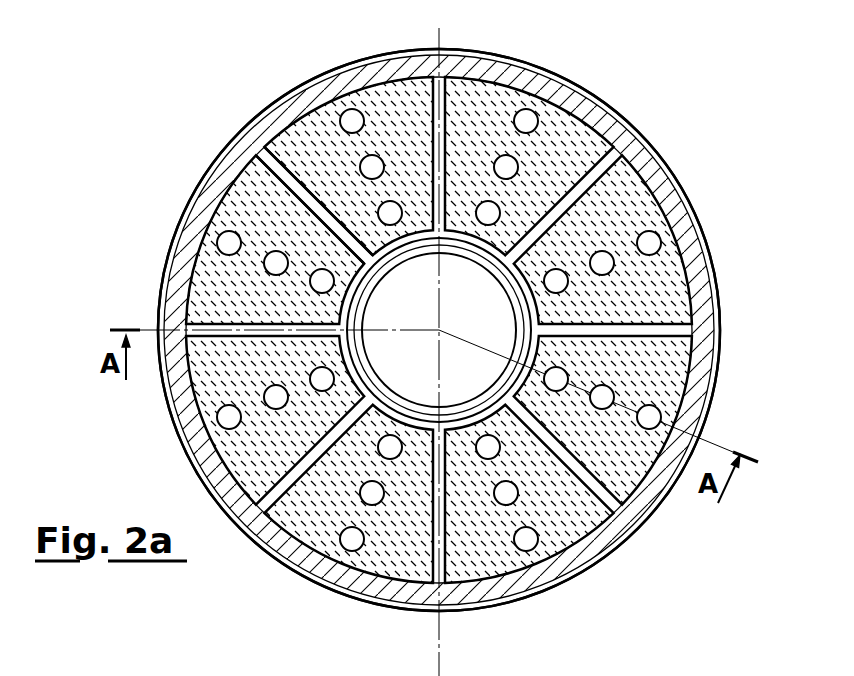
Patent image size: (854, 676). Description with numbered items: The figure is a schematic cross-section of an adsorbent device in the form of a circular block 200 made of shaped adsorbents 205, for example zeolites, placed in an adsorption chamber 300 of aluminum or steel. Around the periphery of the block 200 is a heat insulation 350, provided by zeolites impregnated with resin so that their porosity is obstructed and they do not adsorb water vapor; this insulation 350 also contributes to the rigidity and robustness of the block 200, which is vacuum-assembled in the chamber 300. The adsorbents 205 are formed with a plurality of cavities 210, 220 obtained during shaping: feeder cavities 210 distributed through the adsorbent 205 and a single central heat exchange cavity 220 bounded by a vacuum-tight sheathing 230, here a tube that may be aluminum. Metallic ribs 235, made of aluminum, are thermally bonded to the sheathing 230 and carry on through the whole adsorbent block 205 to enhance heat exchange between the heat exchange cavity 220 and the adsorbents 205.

The adsorbent block 200 is at (640, 86).
The adsorbents 205 is at (630, 205).
The feeder cavities 210 is at (620, 277).
The heat exchange cavity 220 is at (388, 297).
The sheathing 230 is at (360, 318).
The metallic ribs 235 is at (250, 144).
The adsorption chamber 300 is at (720, 348).
The heat insulation 350 is at (698, 395).